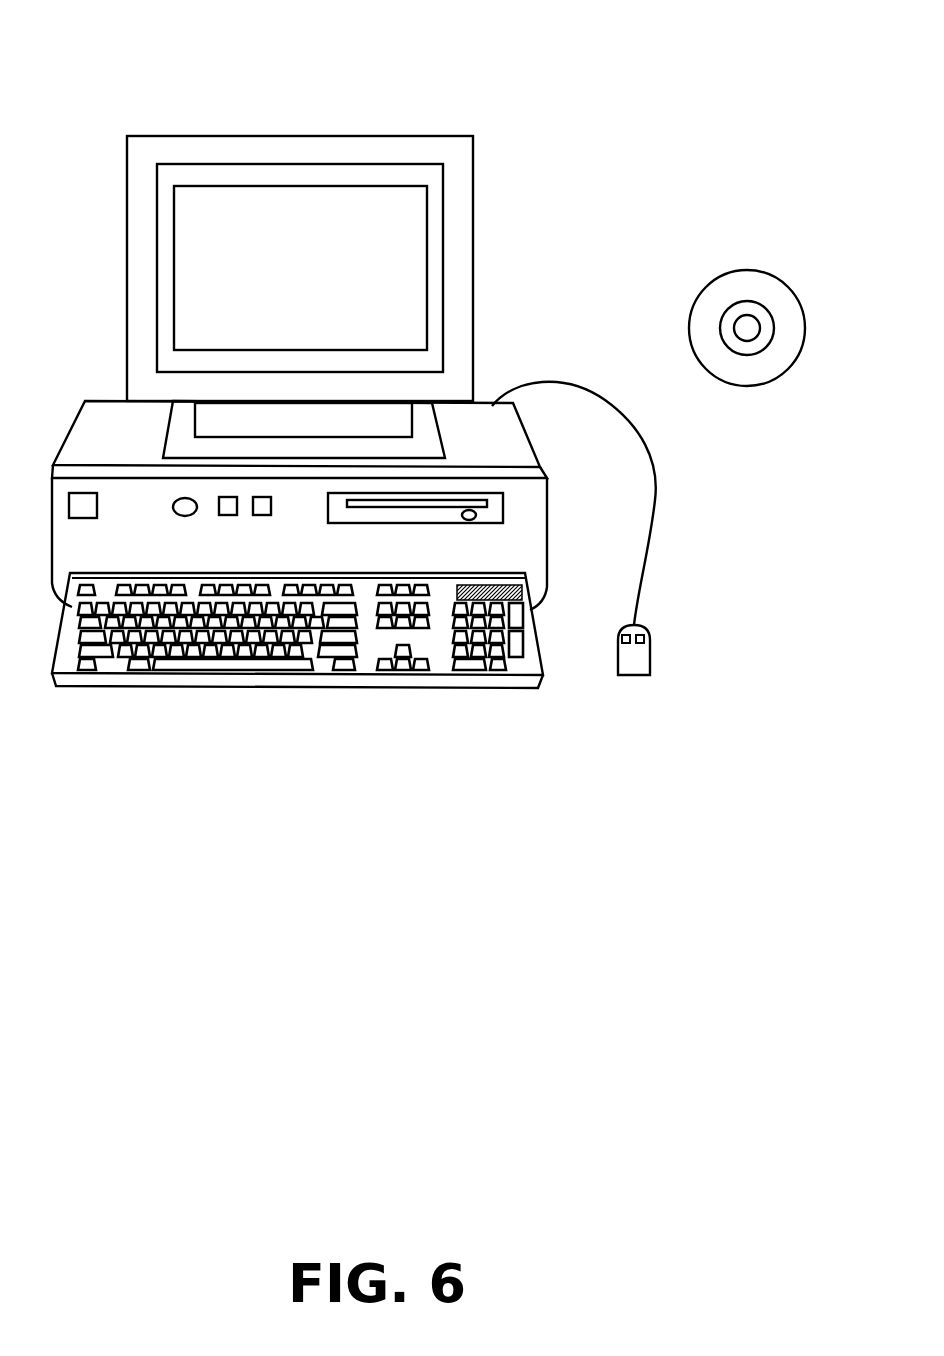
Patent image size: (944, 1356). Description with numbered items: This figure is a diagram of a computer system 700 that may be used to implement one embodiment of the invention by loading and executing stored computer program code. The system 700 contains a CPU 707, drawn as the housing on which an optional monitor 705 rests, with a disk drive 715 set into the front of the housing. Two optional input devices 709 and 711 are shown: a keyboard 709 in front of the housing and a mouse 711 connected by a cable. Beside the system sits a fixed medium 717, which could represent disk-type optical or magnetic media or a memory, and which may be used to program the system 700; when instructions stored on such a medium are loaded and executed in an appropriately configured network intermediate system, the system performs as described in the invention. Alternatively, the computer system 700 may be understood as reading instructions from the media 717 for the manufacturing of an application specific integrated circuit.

The computer system 700 is at (622, 68).
The monitor 705 is at (389, 245).
The CPU 707 is at (490, 435).
The input device 709 is at (288, 687).
The input device 711 is at (653, 638).
The disk drive 715 is at (507, 496).
The fixed medium 717 is at (788, 285).